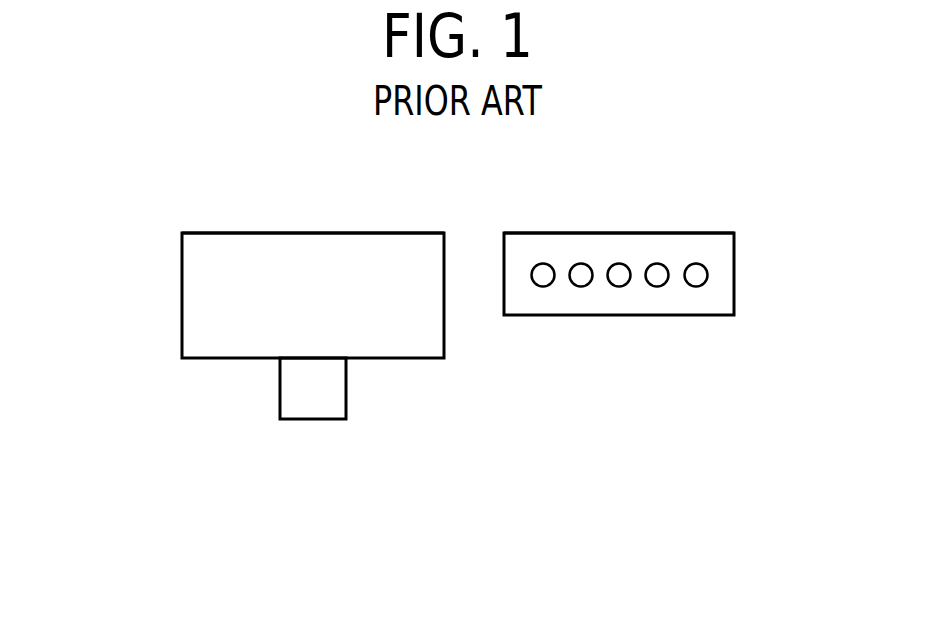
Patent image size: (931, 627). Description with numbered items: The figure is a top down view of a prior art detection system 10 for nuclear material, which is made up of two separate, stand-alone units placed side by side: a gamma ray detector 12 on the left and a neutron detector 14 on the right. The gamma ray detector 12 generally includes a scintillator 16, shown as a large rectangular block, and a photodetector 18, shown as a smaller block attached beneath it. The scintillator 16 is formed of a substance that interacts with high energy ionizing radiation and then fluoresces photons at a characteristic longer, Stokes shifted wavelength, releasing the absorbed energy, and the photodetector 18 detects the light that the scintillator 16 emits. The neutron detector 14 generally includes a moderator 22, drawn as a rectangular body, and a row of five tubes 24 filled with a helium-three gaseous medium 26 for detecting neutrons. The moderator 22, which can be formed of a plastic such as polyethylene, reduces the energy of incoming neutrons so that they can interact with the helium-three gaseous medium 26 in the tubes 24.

The detection system 10 is at (147, 178).
The gamma ray detector 12 is at (329, 208).
The neutron detector 14 is at (629, 208).
The scintillator 16 is at (410, 233).
The photodetector 18 is at (280, 385).
The moderator 22 is at (707, 233).
The tubes 24 is at (696, 287).
The He-3 gaseous medium 26 is at (698, 275).